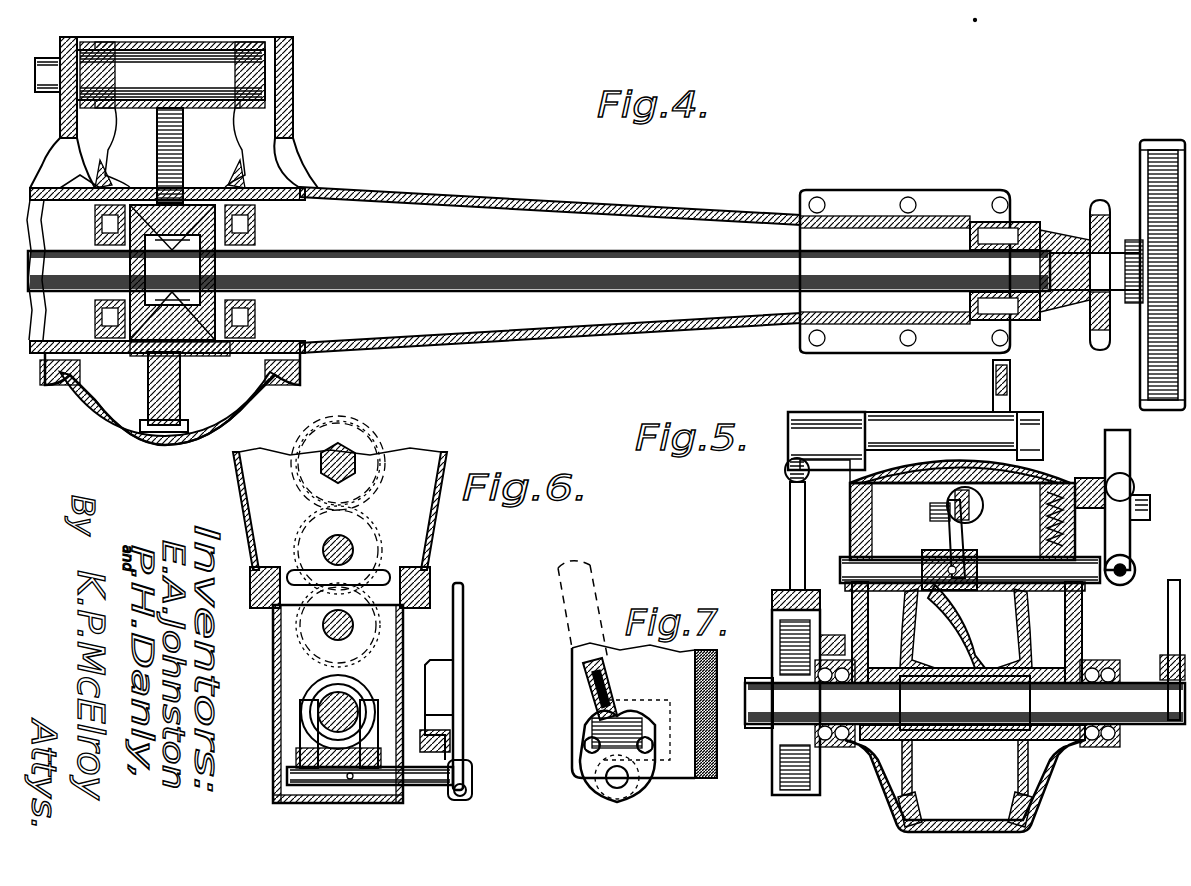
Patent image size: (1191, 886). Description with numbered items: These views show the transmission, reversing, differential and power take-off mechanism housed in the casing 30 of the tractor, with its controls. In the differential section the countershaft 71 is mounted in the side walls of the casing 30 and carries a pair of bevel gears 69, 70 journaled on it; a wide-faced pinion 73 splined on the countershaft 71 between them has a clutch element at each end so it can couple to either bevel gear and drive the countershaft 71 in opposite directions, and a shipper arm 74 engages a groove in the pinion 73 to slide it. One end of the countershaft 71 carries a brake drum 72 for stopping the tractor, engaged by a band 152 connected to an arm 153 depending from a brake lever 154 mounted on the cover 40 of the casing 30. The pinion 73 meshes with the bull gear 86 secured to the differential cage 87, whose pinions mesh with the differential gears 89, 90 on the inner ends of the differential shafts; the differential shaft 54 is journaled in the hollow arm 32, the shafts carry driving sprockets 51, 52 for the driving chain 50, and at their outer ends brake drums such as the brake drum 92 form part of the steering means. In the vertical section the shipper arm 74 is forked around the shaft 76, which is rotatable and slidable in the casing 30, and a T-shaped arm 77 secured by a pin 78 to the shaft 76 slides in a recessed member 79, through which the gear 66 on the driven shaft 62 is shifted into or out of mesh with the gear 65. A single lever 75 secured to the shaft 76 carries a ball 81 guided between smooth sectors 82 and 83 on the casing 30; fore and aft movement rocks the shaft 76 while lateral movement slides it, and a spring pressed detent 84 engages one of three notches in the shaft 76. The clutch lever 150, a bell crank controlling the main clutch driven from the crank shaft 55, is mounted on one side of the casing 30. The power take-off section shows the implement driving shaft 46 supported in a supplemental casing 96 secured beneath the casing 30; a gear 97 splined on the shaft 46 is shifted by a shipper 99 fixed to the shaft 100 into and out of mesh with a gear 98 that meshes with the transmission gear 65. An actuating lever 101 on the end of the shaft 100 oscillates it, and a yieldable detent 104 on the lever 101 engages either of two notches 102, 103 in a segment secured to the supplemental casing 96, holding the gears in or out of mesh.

In FIG. 6, the casing 30 is at (232, 465).
In FIG. 4, the hollow arm 32 is at (572, 340).
In FIG. 5, the cover 40 is at (940, 455).
In FIG. 6, the power take-off shaft 46 is at (318, 712).
In FIG. 4, the driving chain 50 is at (108, 420).
In FIG. 5, the driving chain 50 is at (875, 790).
In FIG. 4, the sprocket 51 is at (175, 339).
In FIG. 4, the sprocket 52 is at (1098, 200).
In FIG. 4, the differential shaft 54 is at (1048, 228).
In FIG. 4, the crank shaft 55 is at (147, 265).
In FIG. 6, the driven shaft 62 is at (380, 448).
In FIG. 6, the gear 65 is at (300, 522).
In FIG. 6, the gear 66 is at (352, 455).
In FIG. 4, the bevel gear 69 is at (163, 155).
In FIG. 5, the bevel gear 69 is at (905, 622).
In FIG. 4, the bevel gear 70 is at (300, 132).
In FIG. 5, the bevel gear 70 is at (1028, 622).
In FIG. 4, the countershaft 71 is at (58, 128).
In FIG. 5, the countershaft 71 is at (1112, 745).
In FIG. 5, the brake drum 72 is at (772, 645).
In FIG. 4, the pinion 73 is at (86, 175).
In FIG. 5, the pinion 73 is at (945, 742).
In FIG. 4, the shipper arm 74 is at (155, 96).
In FIG. 5, the shipper arm 74 is at (970, 615).
In FIG. 5, the lever 75 is at (1130, 450).
In FIG. 5, the shaft 76 is at (1013, 560).
In FIG. 5, the T-shaped arm 77 is at (945, 528).
In FIG. 5, the pin 78 is at (940, 560).
In FIG. 5, the recessed member 79 is at (984, 500).
In FIG. 5, the ball 81 is at (1130, 478).
In FIG. 5, the sector 82 is at (1090, 478).
In FIG. 5, the sector 83 is at (1138, 520).
In FIG. 5, the spring pressed detent 84 is at (1112, 585).
In FIG. 4, the bull gear 86 is at (179, 392).
In FIG. 4, the differential cage 87 is at (189, 359).
In FIG. 4, the differential gear 89 is at (126, 272).
In FIG. 4, the differential gear 90 is at (272, 236).
In FIG. 4, the brake drum 92 is at (1148, 148).
In FIG. 6, the supplemental casing 96 is at (296, 648).
In FIG. 7, the supplemental casing 96 is at (700, 778).
In FIG. 6, the gear 97 is at (300, 688).
In FIG. 6, the gear 98 is at (300, 620).
In FIG. 6, the shipper 99 is at (298, 745).
In FIG. 6, the shaft 100 is at (288, 780).
In FIG. 7, the shaft 100 is at (607, 780).
In FIG. 6, the actuating lever 101 is at (464, 630).
In FIG. 7, the actuating lever 101 is at (594, 575).
In FIG. 7, the notch 102 is at (585, 722).
In FIG. 7, the notch 103 is at (625, 712).
In FIG. 6, the yieldable detent 104 is at (452, 742).
In FIG. 7, the yieldable detent 104 is at (585, 690).
In FIG. 5, the clutch lever 150 is at (1168, 628).
In FIG. 5, the band 152 is at (770, 598).
In FIG. 5, the arm 153 is at (815, 400).
In FIG. 5, the brake lever 154 is at (1012, 390).